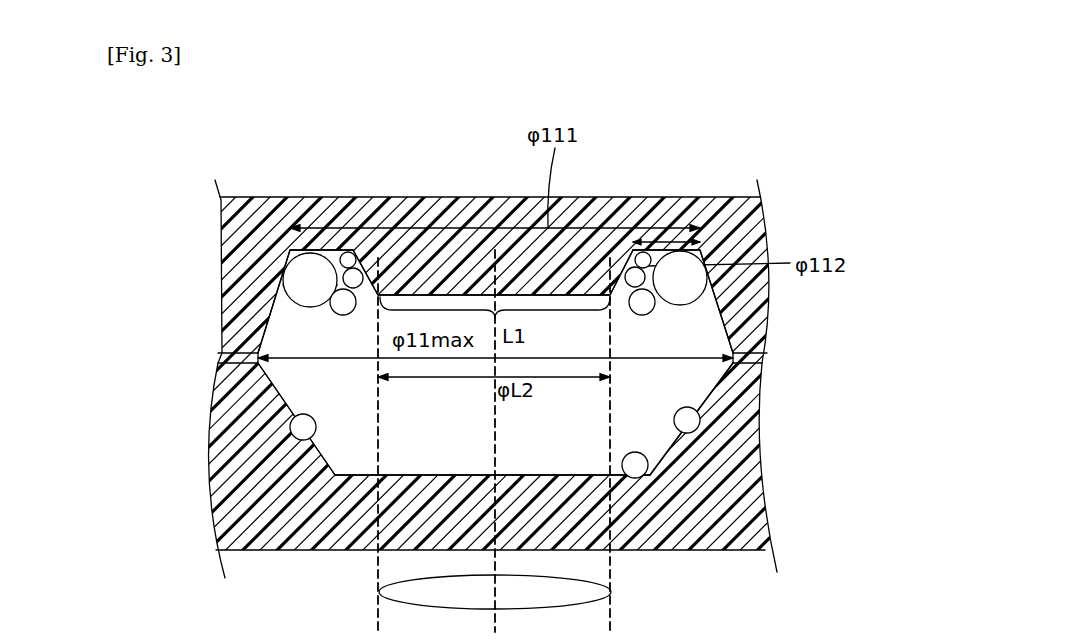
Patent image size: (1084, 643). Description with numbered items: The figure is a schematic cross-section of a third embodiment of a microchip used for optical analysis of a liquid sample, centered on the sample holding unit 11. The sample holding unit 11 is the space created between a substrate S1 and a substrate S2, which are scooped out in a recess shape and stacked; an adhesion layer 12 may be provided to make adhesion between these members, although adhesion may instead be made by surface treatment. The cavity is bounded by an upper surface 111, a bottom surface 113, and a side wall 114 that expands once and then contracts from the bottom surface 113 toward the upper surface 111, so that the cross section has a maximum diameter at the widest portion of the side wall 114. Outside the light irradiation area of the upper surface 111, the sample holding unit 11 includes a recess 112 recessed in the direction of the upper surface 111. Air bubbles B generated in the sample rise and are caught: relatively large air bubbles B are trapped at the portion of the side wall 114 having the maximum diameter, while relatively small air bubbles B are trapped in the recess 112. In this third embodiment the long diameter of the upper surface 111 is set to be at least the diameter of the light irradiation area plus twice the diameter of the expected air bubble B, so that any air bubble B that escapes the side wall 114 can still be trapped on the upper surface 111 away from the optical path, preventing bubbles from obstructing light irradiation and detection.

The sample holding unit 11 is at (357, 406).
The adhesion layer 12 is at (216, 358).
The upper surface 111 is at (453, 297).
The recess 112 is at (350, 252).
The bottom surface 113 is at (643, 478).
The side wall 114 is at (317, 430).
The substrate S1 is at (678, 197).
The substrate S2 is at (740, 530).
The air bubble B is at (682, 298).